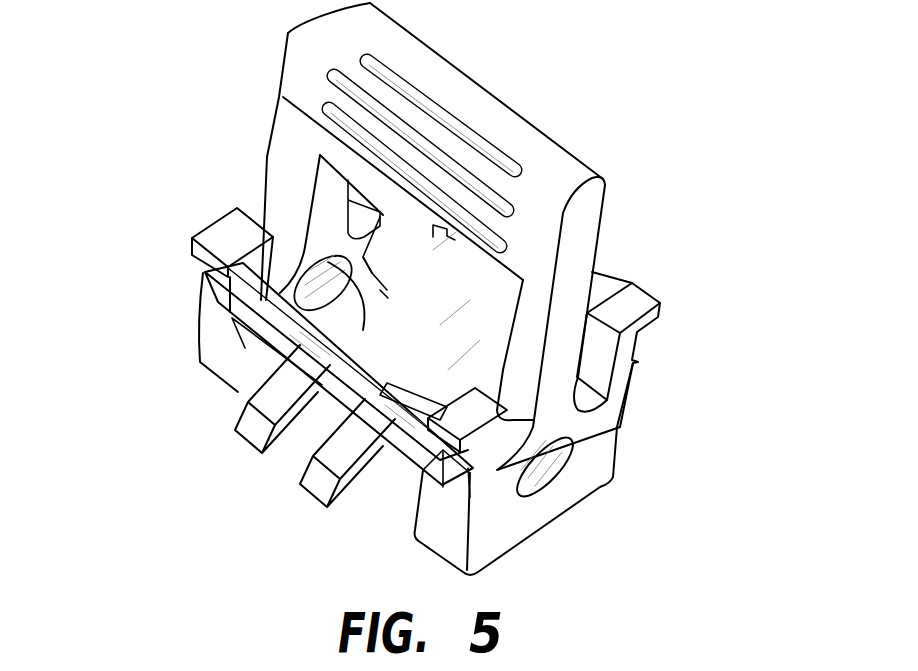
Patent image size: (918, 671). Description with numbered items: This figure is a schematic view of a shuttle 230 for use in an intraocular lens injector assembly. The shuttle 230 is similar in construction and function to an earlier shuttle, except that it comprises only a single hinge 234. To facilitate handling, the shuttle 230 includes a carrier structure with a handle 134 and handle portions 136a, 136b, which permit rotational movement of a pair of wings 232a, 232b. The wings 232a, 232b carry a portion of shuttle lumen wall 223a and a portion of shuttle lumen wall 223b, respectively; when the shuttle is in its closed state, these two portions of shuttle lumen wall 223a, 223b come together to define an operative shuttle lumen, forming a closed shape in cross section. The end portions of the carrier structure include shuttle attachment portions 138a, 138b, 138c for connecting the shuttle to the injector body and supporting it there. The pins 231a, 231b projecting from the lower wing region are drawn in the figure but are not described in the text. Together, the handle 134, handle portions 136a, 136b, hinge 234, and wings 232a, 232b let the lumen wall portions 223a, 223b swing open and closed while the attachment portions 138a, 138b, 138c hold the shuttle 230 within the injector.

The shuttle 230 is at (608, 83).
The handle 134 is at (470, 72).
The handle portion 136a is at (200, 313).
The handle portion 136b is at (597, 497).
The shuttle attachment portion 138a is at (191, 272).
The shuttle attachment portion 138b is at (490, 438).
The shuttle attachment portion 138c is at (675, 302).
The wing 232a is at (200, 362).
The wing 232b is at (592, 272).
The first pin 231a is at (233, 430).
The second pin 231b is at (320, 500).
The portion of shuttle lumen wall 223a is at (385, 295).
The portion of shuttle lumen wall 223b is at (387, 383).
The hinge 234 is at (267, 297).